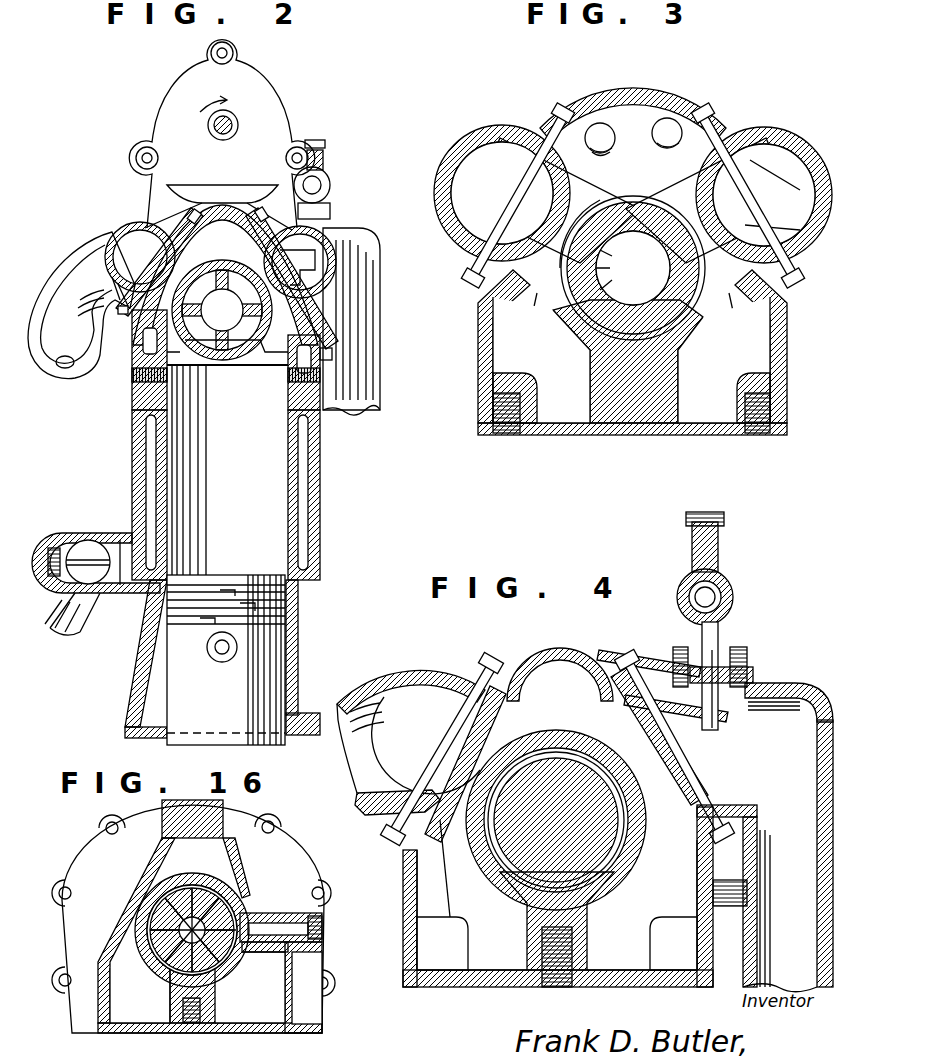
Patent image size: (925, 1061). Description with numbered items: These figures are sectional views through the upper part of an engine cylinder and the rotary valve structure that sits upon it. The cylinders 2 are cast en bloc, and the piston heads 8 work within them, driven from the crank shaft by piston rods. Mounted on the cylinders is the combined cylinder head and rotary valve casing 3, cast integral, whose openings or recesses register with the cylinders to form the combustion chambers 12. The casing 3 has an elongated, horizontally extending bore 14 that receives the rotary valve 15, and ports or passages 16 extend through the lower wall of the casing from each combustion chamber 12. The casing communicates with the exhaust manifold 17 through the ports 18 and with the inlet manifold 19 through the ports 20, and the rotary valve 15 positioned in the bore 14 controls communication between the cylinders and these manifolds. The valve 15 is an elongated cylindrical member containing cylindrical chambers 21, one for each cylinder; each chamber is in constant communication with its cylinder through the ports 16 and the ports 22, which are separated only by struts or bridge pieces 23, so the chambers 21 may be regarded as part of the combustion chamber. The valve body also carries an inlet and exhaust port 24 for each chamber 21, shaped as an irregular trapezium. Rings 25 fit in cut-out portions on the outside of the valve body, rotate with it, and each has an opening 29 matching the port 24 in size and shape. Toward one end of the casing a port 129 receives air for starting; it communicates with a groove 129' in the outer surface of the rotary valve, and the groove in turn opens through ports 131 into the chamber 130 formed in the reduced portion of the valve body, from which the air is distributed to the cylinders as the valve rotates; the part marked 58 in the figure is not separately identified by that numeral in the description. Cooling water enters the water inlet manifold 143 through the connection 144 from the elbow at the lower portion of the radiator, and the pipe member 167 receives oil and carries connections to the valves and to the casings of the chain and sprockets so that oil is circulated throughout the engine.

In FIG. 2, the cylinders 2 is at (278, 465).
In FIG. 2, the cylinder head and rotary valve casing 3 is at (132, 392).
In FIG. 3, the cylinder head and rotary valve casing 3 is at (632, 435).
In FIG. 4, the cylinder head and rotary valve casing 3 is at (575, 650).
In FIG. 16, the cylinder head and rotary valve casing 3 is at (325, 960).
In FIG. 2, the piston heads 8 is at (175, 680).
In FIG. 2, the combustion chambers 12 is at (227, 457).
In FIG. 3, the bore 14 is at (688, 330).
In FIG. 4, the bore 14 is at (556, 730).
In FIG. 2, the rotary valve 15 is at (226, 252).
In FIG. 3, the rotary valve 15 is at (630, 200).
In FIG. 4, the rotary valve 15 is at (592, 860).
In FIG. 16, the rotary valve 15 is at (212, 906).
In FIG. 2, the ports or passages 16 is at (265, 360).
In FIG. 2, the exhaust manifold 17 is at (118, 238).
In FIG. 3, the exhaust manifold 17 is at (502, 193).
In FIG. 4, the exhaust manifold 17 is at (390, 678).
In FIG. 3, the ports 18 is at (555, 200).
In FIG. 2, the inlet manifold 19 is at (322, 232).
In FIG. 3, the inlet manifold 19 is at (764, 195).
In FIG. 4, the inlet manifold 19 is at (660, 685).
In FIG. 3, the ports 20 is at (711, 200).
In FIG. 2, the cylindrical chambers 21 is at (222, 310).
In FIG. 3, the cylindrical chambers 21 is at (633, 268).
In FIG. 2, the ports 22 is at (300, 318).
In FIG. 2, the struts or bridge pieces 23 is at (185, 340).
In FIG. 3, the inlet and exhaust ports 24 is at (618, 267).
In FIG. 3, the rings 25 is at (706, 305).
In FIG. 4, the rings 25 is at (508, 865).
In FIG. 3, the opening 29 is at (562, 295).
In FIG. 16, the bearing housing 58 is at (143, 895).
In FIG. 16, the port 129 is at (281, 916).
In FIG. 16, the groove 129' is at (153, 916).
In FIG. 16, the chamber 130 is at (168, 972).
In FIG. 16, the ports 131 is at (242, 962).
In FIG. 2, the inlet manifold 143 is at (90, 530).
In FIG. 2, the connection 144 is at (55, 625).
In FIG. 2, the pipe member 167 is at (330, 178).
In FIG. 4, the pipe member 167 is at (735, 600).